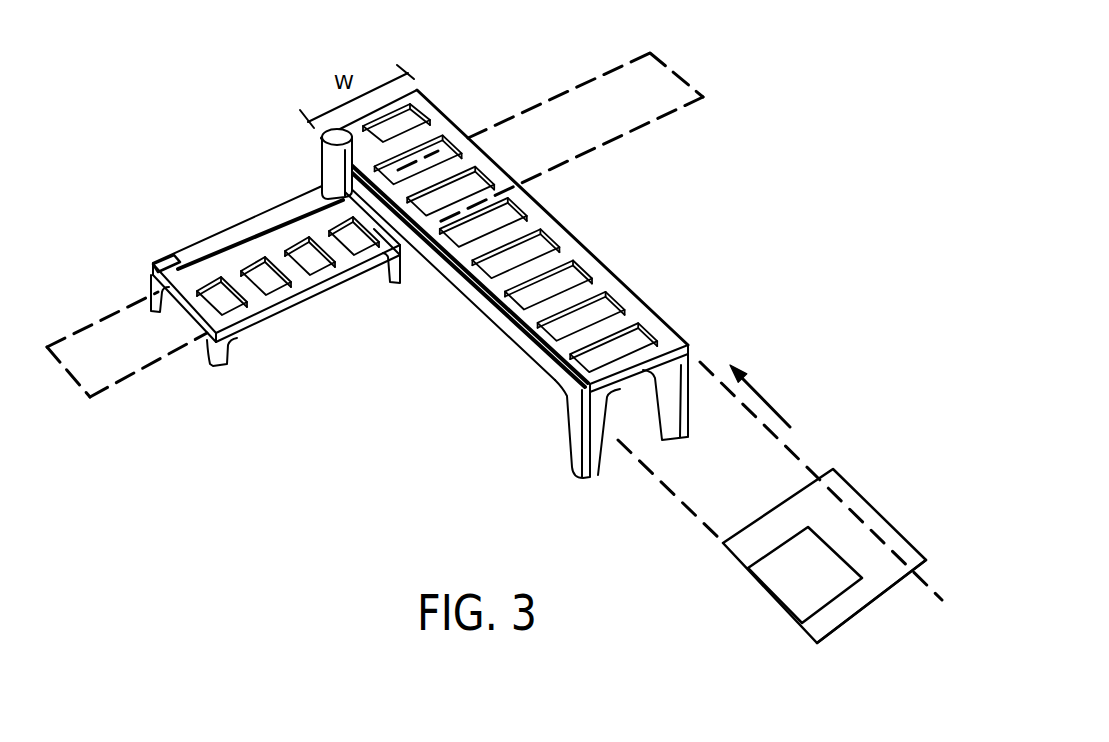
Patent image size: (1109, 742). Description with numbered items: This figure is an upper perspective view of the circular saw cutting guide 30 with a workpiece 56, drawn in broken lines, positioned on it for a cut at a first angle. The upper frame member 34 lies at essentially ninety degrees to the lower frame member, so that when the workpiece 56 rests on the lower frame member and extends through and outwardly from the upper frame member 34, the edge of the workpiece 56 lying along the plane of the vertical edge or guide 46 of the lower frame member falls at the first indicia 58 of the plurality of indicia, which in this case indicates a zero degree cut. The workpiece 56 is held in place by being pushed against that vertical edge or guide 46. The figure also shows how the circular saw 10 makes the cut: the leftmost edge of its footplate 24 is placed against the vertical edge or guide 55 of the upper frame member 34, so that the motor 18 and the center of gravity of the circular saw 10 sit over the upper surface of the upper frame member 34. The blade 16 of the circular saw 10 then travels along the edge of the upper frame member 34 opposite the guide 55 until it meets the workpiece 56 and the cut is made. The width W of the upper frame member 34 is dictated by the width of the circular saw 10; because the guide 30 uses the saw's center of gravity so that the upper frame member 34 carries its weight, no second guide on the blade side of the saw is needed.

The circular saw 10 is at (872, 527).
The blade 16 is at (800, 457).
The motor 18 is at (782, 589).
The footplate 24 is at (857, 603).
The circular saw cutting guide 30 is at (713, 263).
The upper frame member 34 is at (505, 277).
The vertical edge or guide 46 is at (273, 233).
The vertical edge or guide 55 is at (483, 298).
The workpiece 56 is at (592, 82).
The first indicia 58 is at (470, 138).